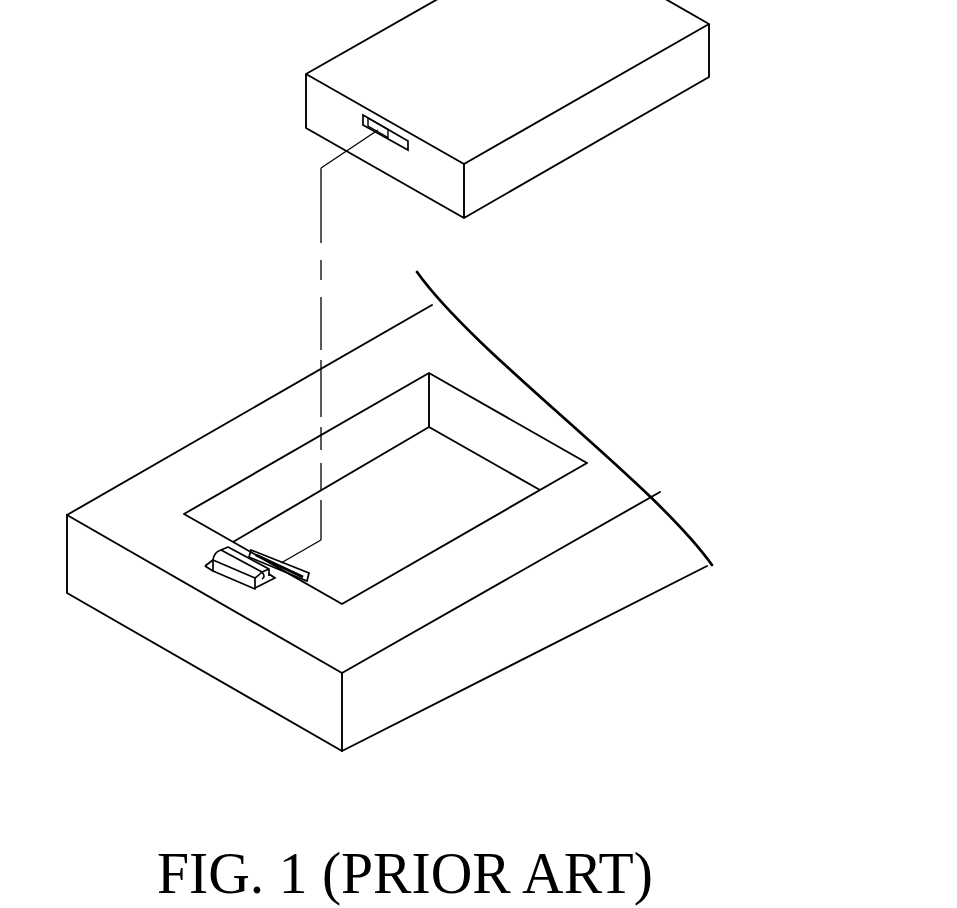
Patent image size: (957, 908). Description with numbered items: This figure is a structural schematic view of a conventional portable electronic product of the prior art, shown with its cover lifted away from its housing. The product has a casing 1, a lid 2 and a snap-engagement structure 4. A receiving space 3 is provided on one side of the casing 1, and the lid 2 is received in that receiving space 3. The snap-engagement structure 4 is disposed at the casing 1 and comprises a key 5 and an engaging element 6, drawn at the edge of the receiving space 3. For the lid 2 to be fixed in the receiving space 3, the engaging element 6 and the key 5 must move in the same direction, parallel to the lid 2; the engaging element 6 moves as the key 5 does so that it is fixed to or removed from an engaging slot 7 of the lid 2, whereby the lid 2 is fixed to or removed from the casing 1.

The casing 1 is at (150, 438).
The lid 2 is at (702, 50).
The receiving space 3 is at (437, 475).
The snap-engagement structure 4 is at (240, 595).
The key 5 is at (227, 572).
The engaging element 6 is at (270, 552).
The engaging slot 7 is at (376, 130).